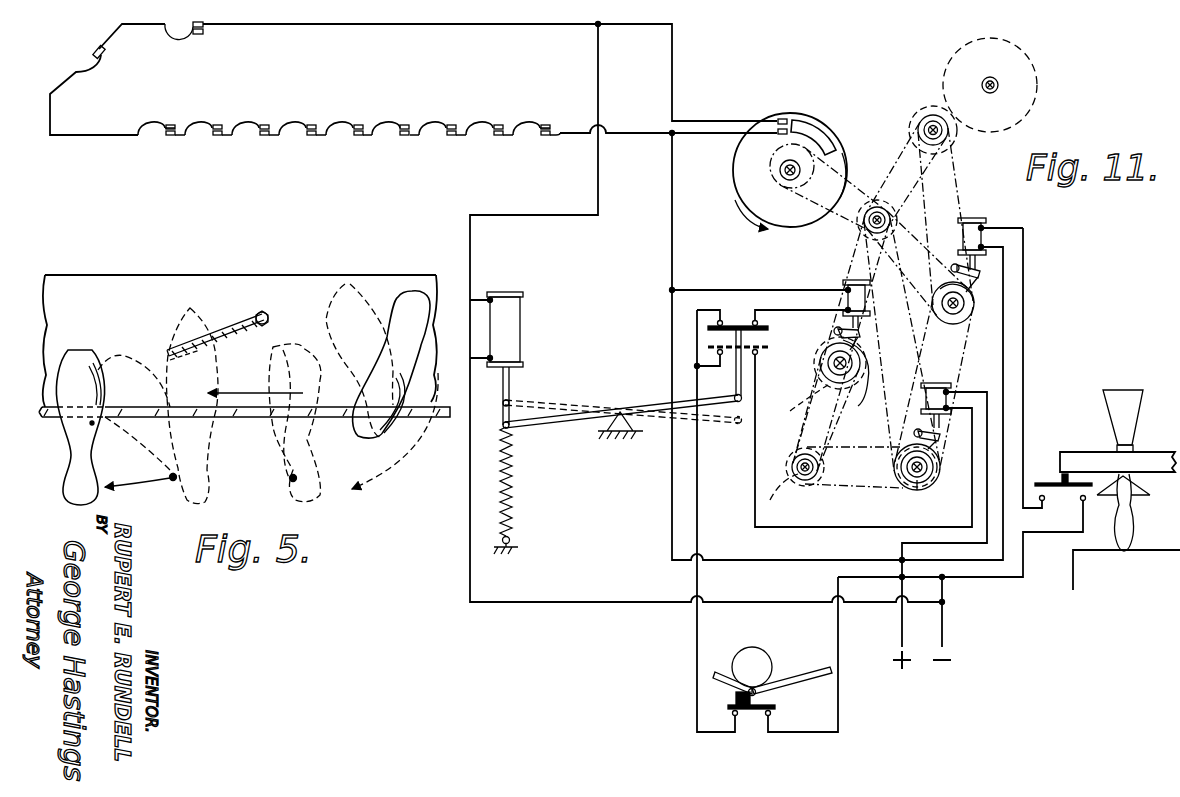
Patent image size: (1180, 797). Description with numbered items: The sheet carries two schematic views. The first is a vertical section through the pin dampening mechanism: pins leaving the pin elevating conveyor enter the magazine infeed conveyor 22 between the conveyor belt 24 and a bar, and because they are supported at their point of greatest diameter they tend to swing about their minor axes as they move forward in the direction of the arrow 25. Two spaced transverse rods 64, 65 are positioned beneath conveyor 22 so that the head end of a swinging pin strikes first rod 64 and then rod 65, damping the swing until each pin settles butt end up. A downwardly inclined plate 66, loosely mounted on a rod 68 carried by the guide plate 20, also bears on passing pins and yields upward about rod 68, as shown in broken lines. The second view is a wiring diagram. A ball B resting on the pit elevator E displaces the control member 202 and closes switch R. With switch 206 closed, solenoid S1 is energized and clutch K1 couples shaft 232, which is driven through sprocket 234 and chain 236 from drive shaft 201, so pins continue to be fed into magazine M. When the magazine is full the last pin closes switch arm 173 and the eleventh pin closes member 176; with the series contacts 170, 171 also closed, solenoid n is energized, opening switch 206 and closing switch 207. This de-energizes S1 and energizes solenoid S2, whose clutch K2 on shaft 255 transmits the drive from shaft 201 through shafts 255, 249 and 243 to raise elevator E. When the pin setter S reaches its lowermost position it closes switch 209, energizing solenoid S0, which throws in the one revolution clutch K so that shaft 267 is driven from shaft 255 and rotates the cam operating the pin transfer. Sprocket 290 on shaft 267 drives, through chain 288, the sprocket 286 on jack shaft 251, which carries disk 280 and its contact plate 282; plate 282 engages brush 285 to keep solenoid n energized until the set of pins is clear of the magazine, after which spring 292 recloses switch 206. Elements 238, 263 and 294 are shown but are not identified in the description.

In FIG. 5, the guide plate 20 is at (329, 275).
In FIG. 5, the conveyor 22 is at (448, 420).
In FIG. 5, the conveyor belt 24 is at (237, 405).
In FIG. 5, the shaft movement arrow 25 is at (265, 420).
In FIG. 5, the rod 64 is at (293, 481).
In FIG. 5, the rod 65 is at (172, 481).
In FIG. 5, the plate 66 is at (228, 338).
In FIG. 5, the rod 68 is at (268, 316).
In FIG. 11, the switch contact 170 is at (240, 120).
In FIG. 11, the switch contact 171 is at (178, 136).
In FIG. 11, the switch 173 is at (194, 37).
In FIG. 11, the circuit closing member 176 is at (102, 58).
In FIG. 11, the magazine M is at (336, 141).
In FIG. 11, the drive shaft 201 is at (806, 481).
In FIG. 11, the control member 202 is at (786, 684).
In FIG. 11, the switch 206 is at (728, 322).
In FIG. 11, the switch 207 is at (716, 354).
In FIG. 11, the switch 209 is at (1066, 494).
In FIG. 11, the shaft 232 is at (830, 363).
In FIG. 11, the sprocket 234 is at (818, 380).
In FIG. 11, the chain 236 is at (808, 402).
In FIG. 11, the belt guide 238 is at (781, 501).
In FIG. 11, the shaft 243 is at (918, 118).
In FIG. 11, the shaft 249 is at (892, 228).
In FIG. 11, the jack shaft 251 is at (780, 172).
In FIG. 11, the shaft 255 is at (917, 490).
In FIG. 11, the brush contacts 263 is at (780, 116).
In FIG. 11, the shaft 267 is at (958, 305).
In FIG. 11, the disk 280 is at (846, 162).
In FIG. 11, the contact plate 282 is at (814, 128).
In FIG. 11, the brush 285 is at (778, 134).
In FIG. 11, the sprocket 286 is at (806, 174).
In FIG. 11, the chain 288 is at (838, 237).
In FIG. 11, the sprocket 290 is at (948, 325).
In FIG. 11, the spring 292 is at (522, 477).
In FIG. 11, the lever 294 is at (563, 410).
In FIG. 11, the solenoid n is at (520, 320).
In FIG. 11, the ball B is at (756, 648).
In FIG. 11, the elevator E is at (800, 672).
In FIG. 11, the switch R is at (751, 720).
In FIG. 11, the pin setter S is at (1080, 440).
In FIG. 11, the solenoid S0 is at (966, 236).
In FIG. 11, the solenoid S1 is at (852, 280).
In FIG. 11, the solenoid S2 is at (938, 376).
In FIG. 11, the clutch K is at (970, 299).
In FIG. 11, the clutch K1 is at (861, 385).
In FIG. 11, the clutch K2 is at (930, 467).